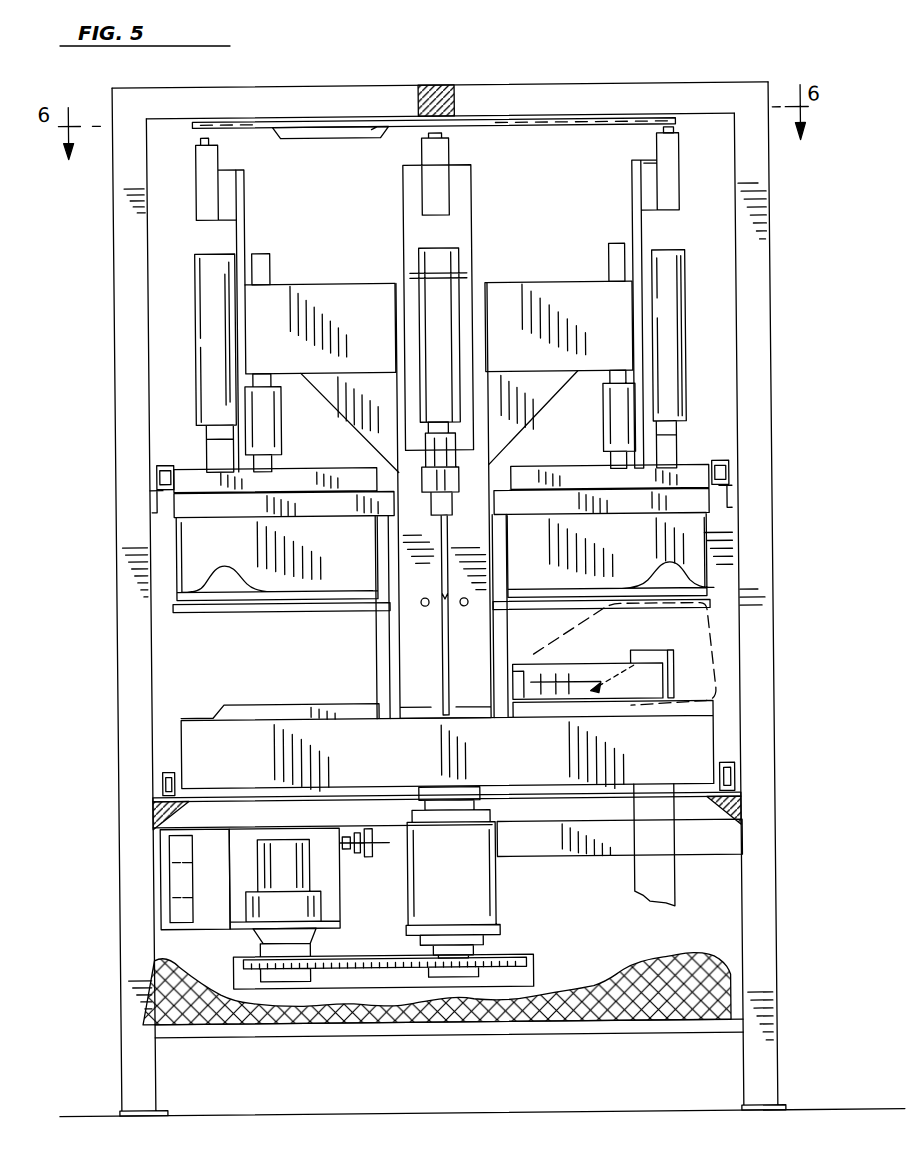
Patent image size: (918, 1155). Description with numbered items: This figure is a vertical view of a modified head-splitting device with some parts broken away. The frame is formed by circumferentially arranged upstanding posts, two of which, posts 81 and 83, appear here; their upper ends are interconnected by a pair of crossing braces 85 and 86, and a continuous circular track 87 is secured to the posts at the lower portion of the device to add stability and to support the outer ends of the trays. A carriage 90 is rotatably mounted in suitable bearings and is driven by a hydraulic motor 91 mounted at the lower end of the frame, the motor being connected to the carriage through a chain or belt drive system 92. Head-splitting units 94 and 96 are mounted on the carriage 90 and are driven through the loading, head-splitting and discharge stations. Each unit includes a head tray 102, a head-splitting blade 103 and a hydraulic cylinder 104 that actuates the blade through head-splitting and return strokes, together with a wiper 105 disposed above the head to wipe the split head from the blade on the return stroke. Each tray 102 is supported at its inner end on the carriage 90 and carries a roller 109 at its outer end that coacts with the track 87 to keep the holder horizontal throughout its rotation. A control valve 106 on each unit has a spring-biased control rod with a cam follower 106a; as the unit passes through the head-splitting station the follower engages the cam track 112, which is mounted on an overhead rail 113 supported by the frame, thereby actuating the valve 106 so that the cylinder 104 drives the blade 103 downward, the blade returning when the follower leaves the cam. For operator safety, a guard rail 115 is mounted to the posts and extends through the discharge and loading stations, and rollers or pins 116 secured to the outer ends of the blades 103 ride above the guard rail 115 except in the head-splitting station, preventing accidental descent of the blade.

The upstanding post 81 is at (116, 765).
The upstanding post 83 is at (740, 692).
The crossing brace 85 is at (440, 90).
The crossing brace 86 is at (567, 95).
The continuous circular track 87 is at (739, 801).
The carriage 90 is at (484, 278).
The hydraulic motor 91 is at (254, 907).
The chain or belt drive system 92 is at (378, 956).
The head-splitting unit 94 is at (343, 278).
The head-splitting unit 96 is at (563, 280).
The head tray 102 is at (703, 728).
The head-splitting blade 103 is at (708, 530).
The hydraulic cylinder 104 is at (688, 312).
The wiper 105 is at (708, 599).
The control valve 106 is at (682, 167).
The cam follower 106a is at (668, 133).
The roller 109 is at (727, 772).
The cam track 112 is at (330, 138).
The overhead rail 113 is at (474, 126).
The guard rail 115 is at (729, 484).
The roller or pin 116 is at (720, 462).